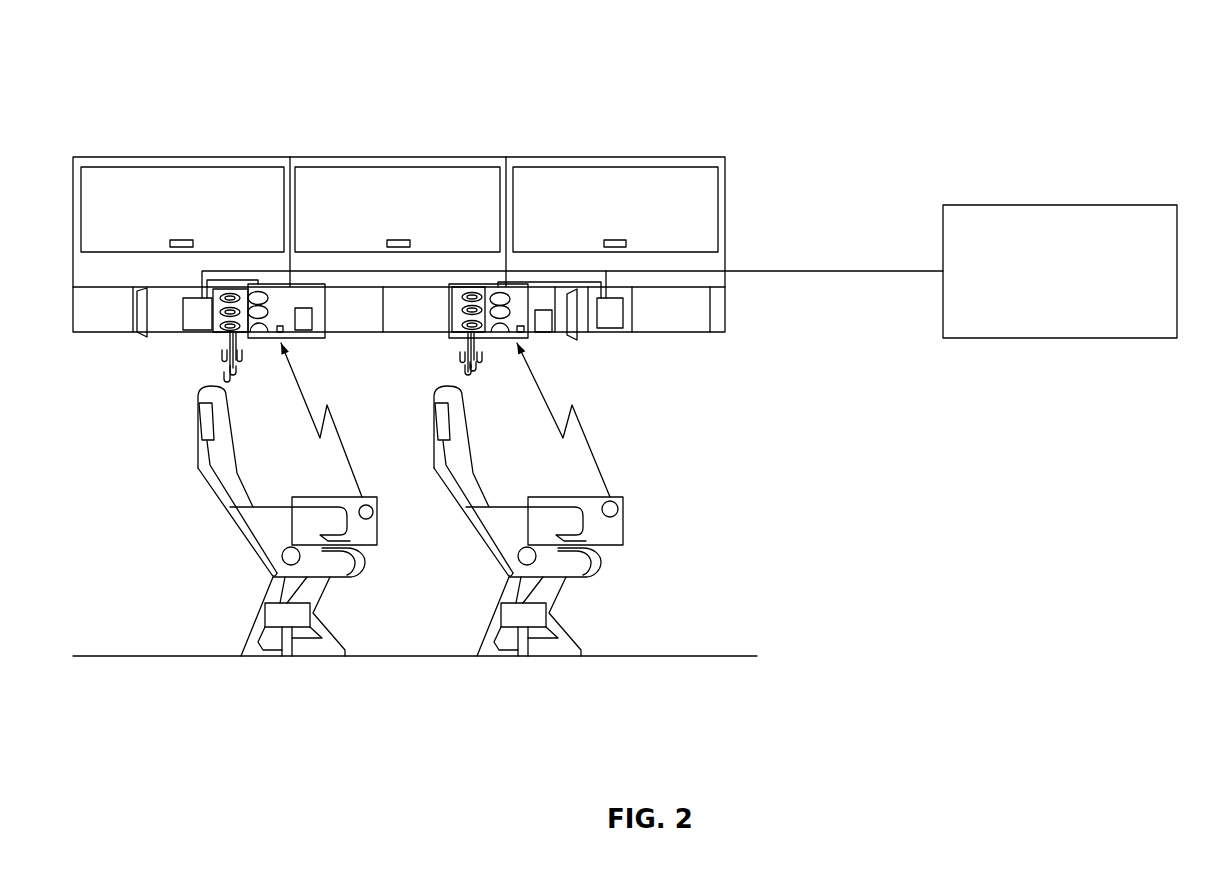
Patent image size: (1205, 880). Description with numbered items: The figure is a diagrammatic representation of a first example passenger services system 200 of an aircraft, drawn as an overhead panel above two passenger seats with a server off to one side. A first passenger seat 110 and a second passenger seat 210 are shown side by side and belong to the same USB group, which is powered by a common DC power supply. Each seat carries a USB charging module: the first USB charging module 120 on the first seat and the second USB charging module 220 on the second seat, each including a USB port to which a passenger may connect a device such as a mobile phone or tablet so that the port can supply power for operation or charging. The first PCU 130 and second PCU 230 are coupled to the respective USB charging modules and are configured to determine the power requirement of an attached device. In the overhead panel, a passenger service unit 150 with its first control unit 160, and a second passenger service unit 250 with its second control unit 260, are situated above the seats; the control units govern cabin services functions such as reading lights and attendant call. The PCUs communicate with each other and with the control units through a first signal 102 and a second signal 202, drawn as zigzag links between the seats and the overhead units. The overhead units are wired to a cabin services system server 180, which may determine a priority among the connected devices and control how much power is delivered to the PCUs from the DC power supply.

The passenger services system 200 is at (165, 55).
The first passenger seat 110 is at (300, 680).
The first USB charging module 120 is at (371, 517).
The first PCU 130 is at (302, 520).
The first signal 102 is at (310, 408).
The passenger service unit 150 is at (277, 288).
The first control unit 160 is at (303, 318).
The cabin services system server 180 is at (1034, 285).
The second passenger seat 210 is at (537, 680).
The second USB charging module 220 is at (618, 505).
The second PCU 230 is at (625, 540).
The second signal 202 is at (592, 452).
The second passenger service unit 250 is at (515, 297).
The second control unit 260 is at (547, 321).